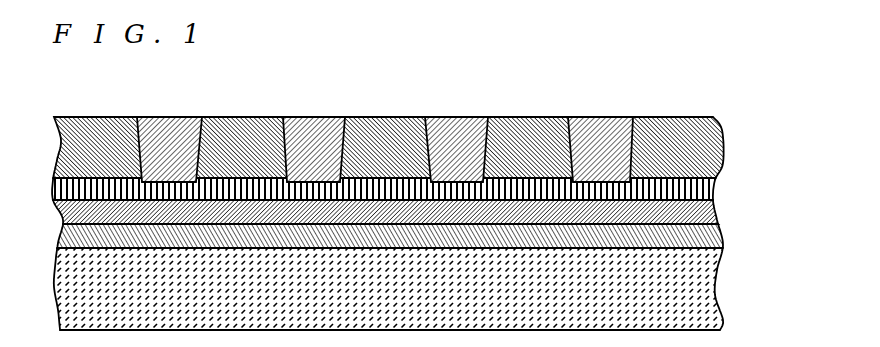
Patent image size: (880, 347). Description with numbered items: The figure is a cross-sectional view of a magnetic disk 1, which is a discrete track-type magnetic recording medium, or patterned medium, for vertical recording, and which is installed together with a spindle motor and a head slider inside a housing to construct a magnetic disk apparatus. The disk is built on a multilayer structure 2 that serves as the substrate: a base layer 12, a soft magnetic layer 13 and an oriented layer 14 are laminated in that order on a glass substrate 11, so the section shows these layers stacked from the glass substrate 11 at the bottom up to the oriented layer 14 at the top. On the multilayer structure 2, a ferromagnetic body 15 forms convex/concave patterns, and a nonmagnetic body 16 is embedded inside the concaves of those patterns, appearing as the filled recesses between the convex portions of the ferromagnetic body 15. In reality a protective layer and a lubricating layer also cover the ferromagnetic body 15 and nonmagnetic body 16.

The magnetic disk 1 is at (415, 78).
The multilayer structure 2 is at (438, 250).
The glass substrate 11 is at (428, 289).
The base layer 12 is at (719, 236).
The soft magnetic layer 13 is at (713, 212).
The oriented layer 14 is at (712, 188).
The ferromagnetic body 15 is at (702, 148).
The nonmagnetic body 16 is at (600, 148).